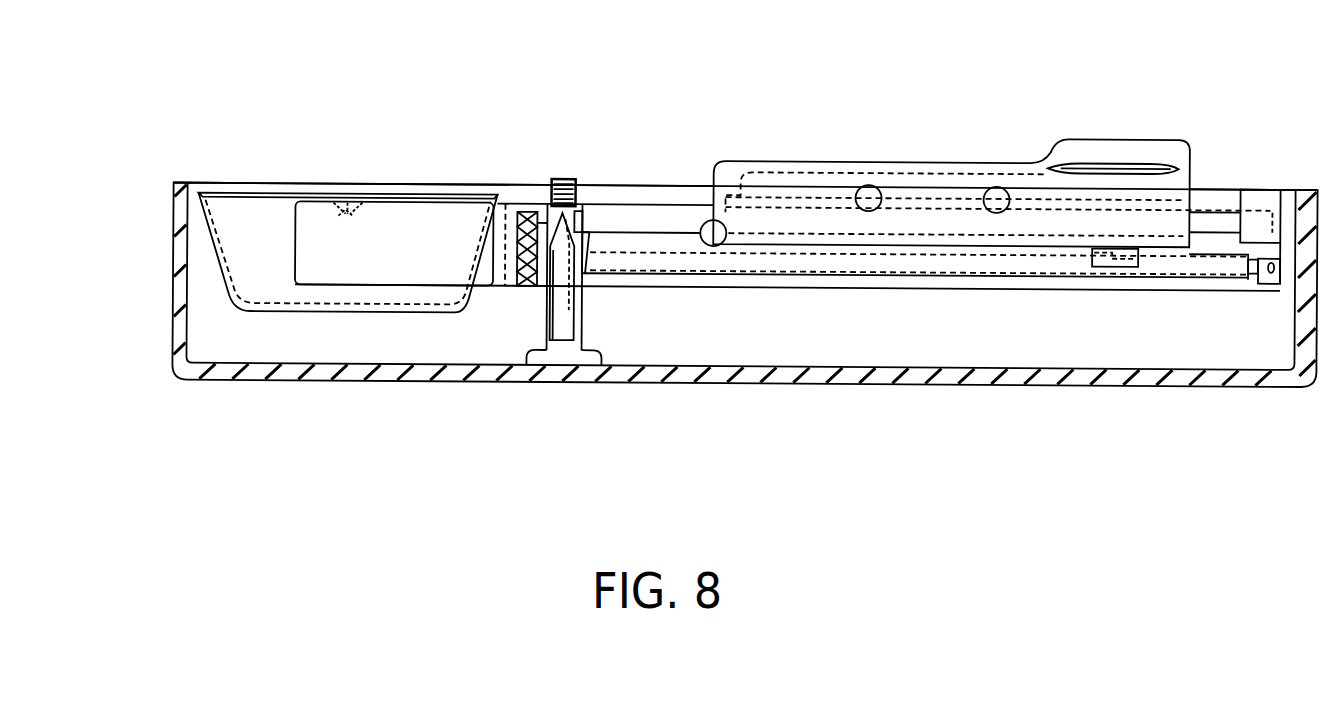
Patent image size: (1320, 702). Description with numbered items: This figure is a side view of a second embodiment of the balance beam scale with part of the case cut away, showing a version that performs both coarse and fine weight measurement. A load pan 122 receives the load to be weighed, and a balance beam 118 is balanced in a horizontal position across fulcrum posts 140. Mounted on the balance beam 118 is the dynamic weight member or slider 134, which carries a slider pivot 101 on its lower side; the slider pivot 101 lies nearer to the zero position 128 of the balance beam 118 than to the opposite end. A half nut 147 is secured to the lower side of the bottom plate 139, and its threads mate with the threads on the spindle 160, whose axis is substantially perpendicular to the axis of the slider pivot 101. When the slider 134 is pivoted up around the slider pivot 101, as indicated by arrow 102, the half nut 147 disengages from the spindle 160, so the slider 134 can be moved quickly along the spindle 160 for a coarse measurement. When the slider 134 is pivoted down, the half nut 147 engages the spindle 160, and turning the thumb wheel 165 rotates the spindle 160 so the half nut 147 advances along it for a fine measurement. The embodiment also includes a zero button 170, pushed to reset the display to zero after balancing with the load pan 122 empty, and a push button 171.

The slider pivot 101 is at (718, 246).
The arrow 102 is at (932, 186).
The balance beam 118 is at (654, 161).
The load pan 122 is at (242, 247).
The zero position 128 is at (586, 160).
The dynamic weight member 134 is at (771, 138).
The bottom plate 139 is at (893, 247).
The fulcrum posts 140 is at (582, 311).
The half nut 147 is at (1096, 266).
The spindle 160 is at (822, 267).
The thumb wheel 165 is at (560, 180).
The zero button 170 is at (860, 186).
The push button 171 is at (990, 186).